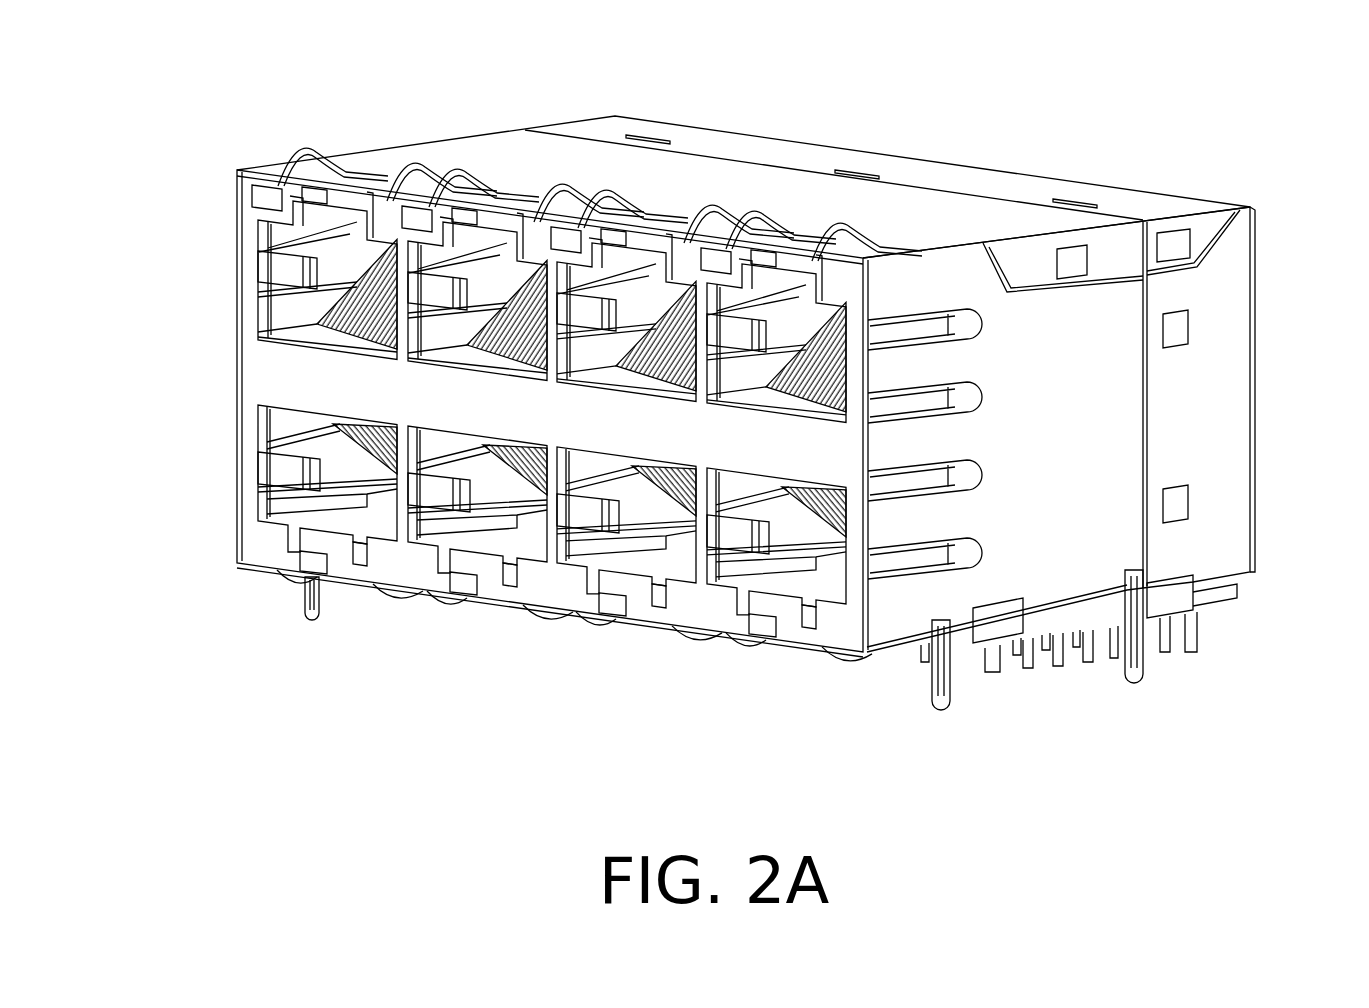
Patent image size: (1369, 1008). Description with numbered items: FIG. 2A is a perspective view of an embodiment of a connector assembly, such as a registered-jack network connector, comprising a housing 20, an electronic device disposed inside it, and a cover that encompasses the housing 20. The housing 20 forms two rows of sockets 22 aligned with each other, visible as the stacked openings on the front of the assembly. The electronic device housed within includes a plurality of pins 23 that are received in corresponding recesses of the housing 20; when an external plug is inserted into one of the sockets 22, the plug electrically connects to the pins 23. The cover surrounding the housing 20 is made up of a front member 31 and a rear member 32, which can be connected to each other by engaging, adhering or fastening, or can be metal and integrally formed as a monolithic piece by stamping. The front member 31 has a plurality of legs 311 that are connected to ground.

The housing 20 is at (312, 388).
The sockets 22 is at (343, 243).
The pins 23 is at (343, 456).
The front member 31 is at (515, 158).
The legs 311 is at (308, 615).
The rear member 32 is at (1207, 367).